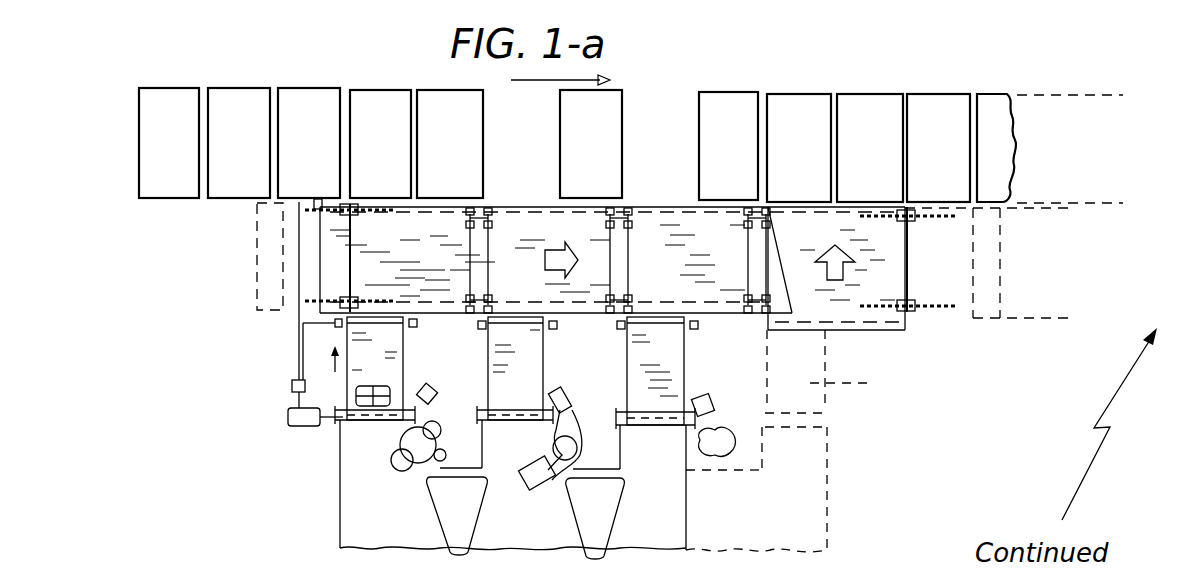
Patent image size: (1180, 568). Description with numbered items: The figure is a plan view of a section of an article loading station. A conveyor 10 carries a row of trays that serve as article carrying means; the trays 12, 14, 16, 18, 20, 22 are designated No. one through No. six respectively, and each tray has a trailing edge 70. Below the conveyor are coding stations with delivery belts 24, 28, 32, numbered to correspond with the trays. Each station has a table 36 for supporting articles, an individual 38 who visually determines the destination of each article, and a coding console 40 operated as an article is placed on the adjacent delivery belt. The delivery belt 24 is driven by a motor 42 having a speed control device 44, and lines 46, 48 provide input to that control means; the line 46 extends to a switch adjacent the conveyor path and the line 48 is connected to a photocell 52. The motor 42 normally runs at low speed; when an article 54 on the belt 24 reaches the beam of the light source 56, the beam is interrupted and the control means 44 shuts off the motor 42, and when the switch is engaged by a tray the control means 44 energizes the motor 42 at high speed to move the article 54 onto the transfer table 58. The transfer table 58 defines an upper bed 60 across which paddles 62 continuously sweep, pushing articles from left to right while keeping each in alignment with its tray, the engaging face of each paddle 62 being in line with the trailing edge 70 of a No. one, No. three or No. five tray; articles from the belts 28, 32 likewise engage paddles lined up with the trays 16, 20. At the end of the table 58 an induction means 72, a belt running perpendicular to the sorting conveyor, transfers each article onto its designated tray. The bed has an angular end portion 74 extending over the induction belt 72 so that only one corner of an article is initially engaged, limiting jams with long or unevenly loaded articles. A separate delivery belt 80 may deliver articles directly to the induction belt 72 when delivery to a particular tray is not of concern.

The conveyor 10 is at (148, 64).
The tray 12 is at (370, 98).
The tray 14 is at (866, 108).
The tray 16 is at (950, 108).
The tray 18 is at (997, 96).
The tray 20 is at (237, 93).
The tray 22 is at (295, 98).
The delivery belt 24 is at (392, 372).
The delivery belt 28 is at (535, 370).
The delivery belt 32 is at (680, 370).
The table 36 is at (353, 500).
The individual 38 is at (427, 430).
The coding console 40 is at (430, 392).
The motor 42 is at (293, 426).
The speed control device 44 is at (292, 385).
The line 46 is at (299, 318).
The line 48 is at (304, 360).
The photocell 52 is at (335, 324).
The article 54 is at (530, 478).
The light source 56 is at (417, 325).
The transfer table 58 is at (605, 277).
The upper bed 60 is at (585, 320).
The paddle 62 is at (488, 256).
The trailing edge 70 is at (352, 120).
The induction means 72 is at (890, 283).
The angular end portion 74 is at (775, 276).
The separate delivery belt 80 is at (792, 441).